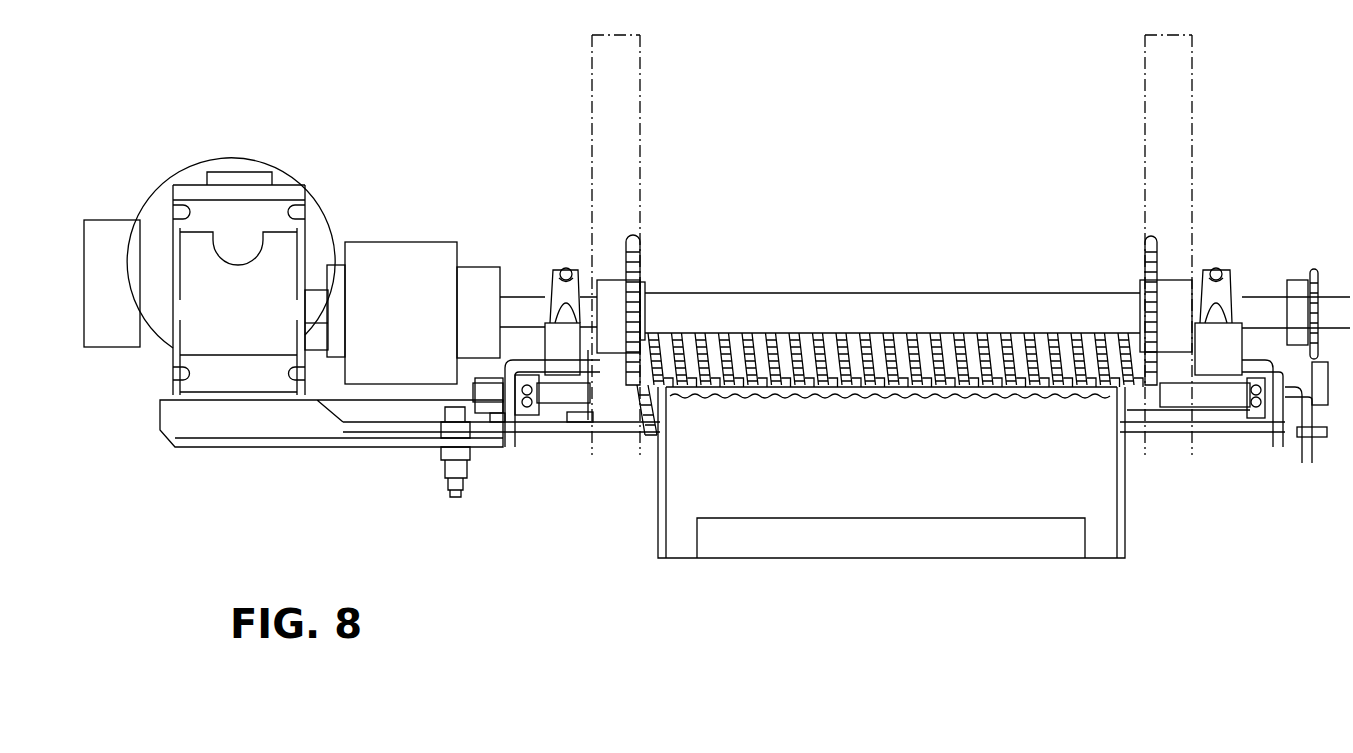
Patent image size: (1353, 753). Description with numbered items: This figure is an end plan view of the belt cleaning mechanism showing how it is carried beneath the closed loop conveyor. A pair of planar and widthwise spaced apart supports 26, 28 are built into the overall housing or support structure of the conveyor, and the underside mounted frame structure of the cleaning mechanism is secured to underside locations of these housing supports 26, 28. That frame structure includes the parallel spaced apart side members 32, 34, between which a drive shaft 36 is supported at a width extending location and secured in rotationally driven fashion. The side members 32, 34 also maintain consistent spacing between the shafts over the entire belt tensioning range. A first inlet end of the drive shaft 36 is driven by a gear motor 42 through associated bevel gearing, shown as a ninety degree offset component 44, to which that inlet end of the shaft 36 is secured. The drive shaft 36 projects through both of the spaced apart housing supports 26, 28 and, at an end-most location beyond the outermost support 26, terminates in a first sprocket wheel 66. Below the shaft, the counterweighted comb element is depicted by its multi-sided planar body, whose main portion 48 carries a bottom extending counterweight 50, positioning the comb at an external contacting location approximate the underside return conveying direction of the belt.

The support 26 is at (1192, 72).
The support 28 is at (588, 80).
The side member 32 is at (627, 372).
The side member 34 is at (1160, 380).
The drive shaft 36 is at (885, 310).
The gear motor 42 is at (235, 160).
The ninety degree offset component 44 is at (388, 265).
The main portion 48 is at (842, 492).
The counterweight 50 is at (837, 545).
The first sprocket wheel 66 is at (1305, 268).